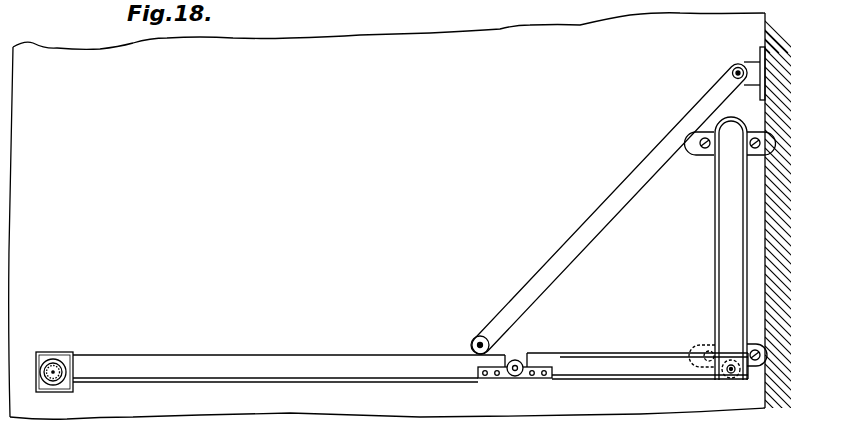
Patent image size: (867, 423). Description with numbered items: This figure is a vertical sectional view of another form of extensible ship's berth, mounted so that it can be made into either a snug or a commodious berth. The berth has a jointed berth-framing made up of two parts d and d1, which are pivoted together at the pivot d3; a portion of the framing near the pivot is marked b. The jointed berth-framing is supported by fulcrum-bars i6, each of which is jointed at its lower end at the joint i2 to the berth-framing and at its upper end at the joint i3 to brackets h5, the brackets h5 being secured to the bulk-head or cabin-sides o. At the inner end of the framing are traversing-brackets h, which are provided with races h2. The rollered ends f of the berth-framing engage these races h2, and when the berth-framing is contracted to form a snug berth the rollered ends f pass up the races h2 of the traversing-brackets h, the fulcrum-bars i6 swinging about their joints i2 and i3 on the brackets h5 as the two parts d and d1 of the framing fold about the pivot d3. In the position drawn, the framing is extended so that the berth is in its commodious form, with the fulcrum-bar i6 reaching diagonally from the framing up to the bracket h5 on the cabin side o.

The bulk-head or cabin-sides o is at (407, 218).
The jointed berth-framing d is at (270, 360).
The jointed berth-framing d1 is at (637, 350).
The pivot d3 is at (518, 361).
The bar b is at (650, 368).
The rollered ends f is at (721, 371).
The traversing-brackets h is at (715, 232).
The races h2 is at (730, 308).
The brackets h5 is at (745, 79).
The joint i2 is at (480, 336).
The joint i3 is at (733, 67).
The fulcrum-bars i6 is at (605, 205).